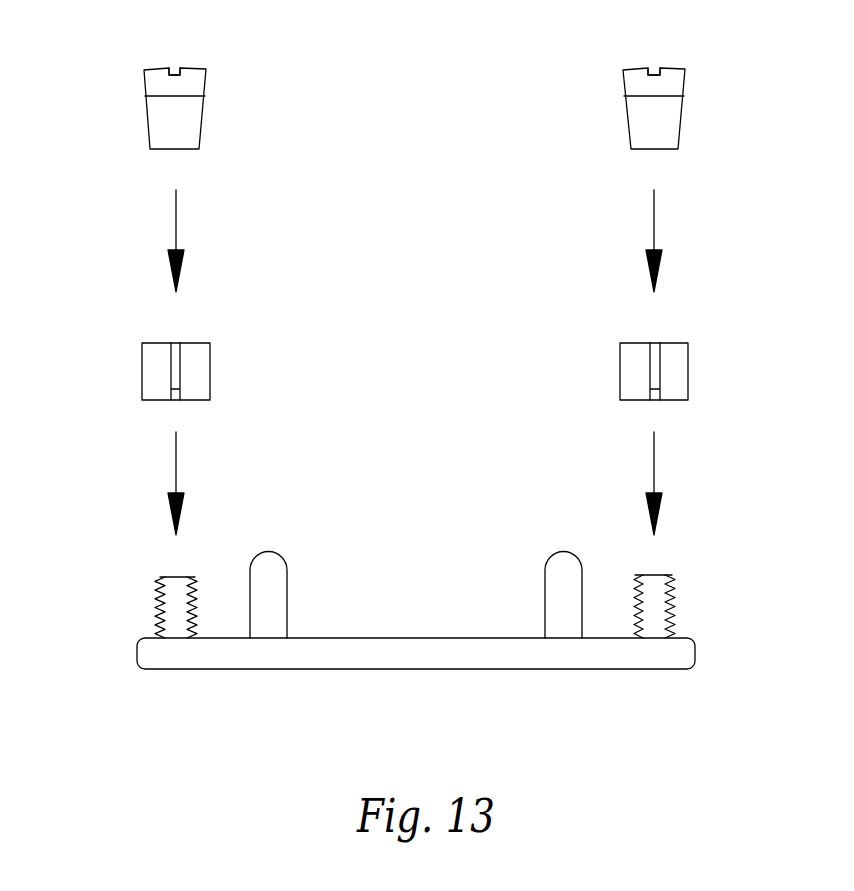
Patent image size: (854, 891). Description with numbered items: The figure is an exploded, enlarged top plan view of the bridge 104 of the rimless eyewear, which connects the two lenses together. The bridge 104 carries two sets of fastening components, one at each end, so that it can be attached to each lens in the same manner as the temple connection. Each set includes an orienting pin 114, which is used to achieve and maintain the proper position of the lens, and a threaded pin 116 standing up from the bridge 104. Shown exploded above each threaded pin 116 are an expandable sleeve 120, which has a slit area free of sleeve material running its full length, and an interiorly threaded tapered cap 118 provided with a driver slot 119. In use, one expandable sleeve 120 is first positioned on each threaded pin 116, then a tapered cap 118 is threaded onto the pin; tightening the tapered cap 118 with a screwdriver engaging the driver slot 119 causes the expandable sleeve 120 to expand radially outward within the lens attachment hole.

The bridge 104 is at (418, 545).
The orienting pin 114 is at (268, 552).
The threaded pin 116 is at (157, 593).
The tapered cap 118 is at (140, 83).
The driver slot 119 is at (175, 66).
The expandable sleeve 120 is at (157, 377).